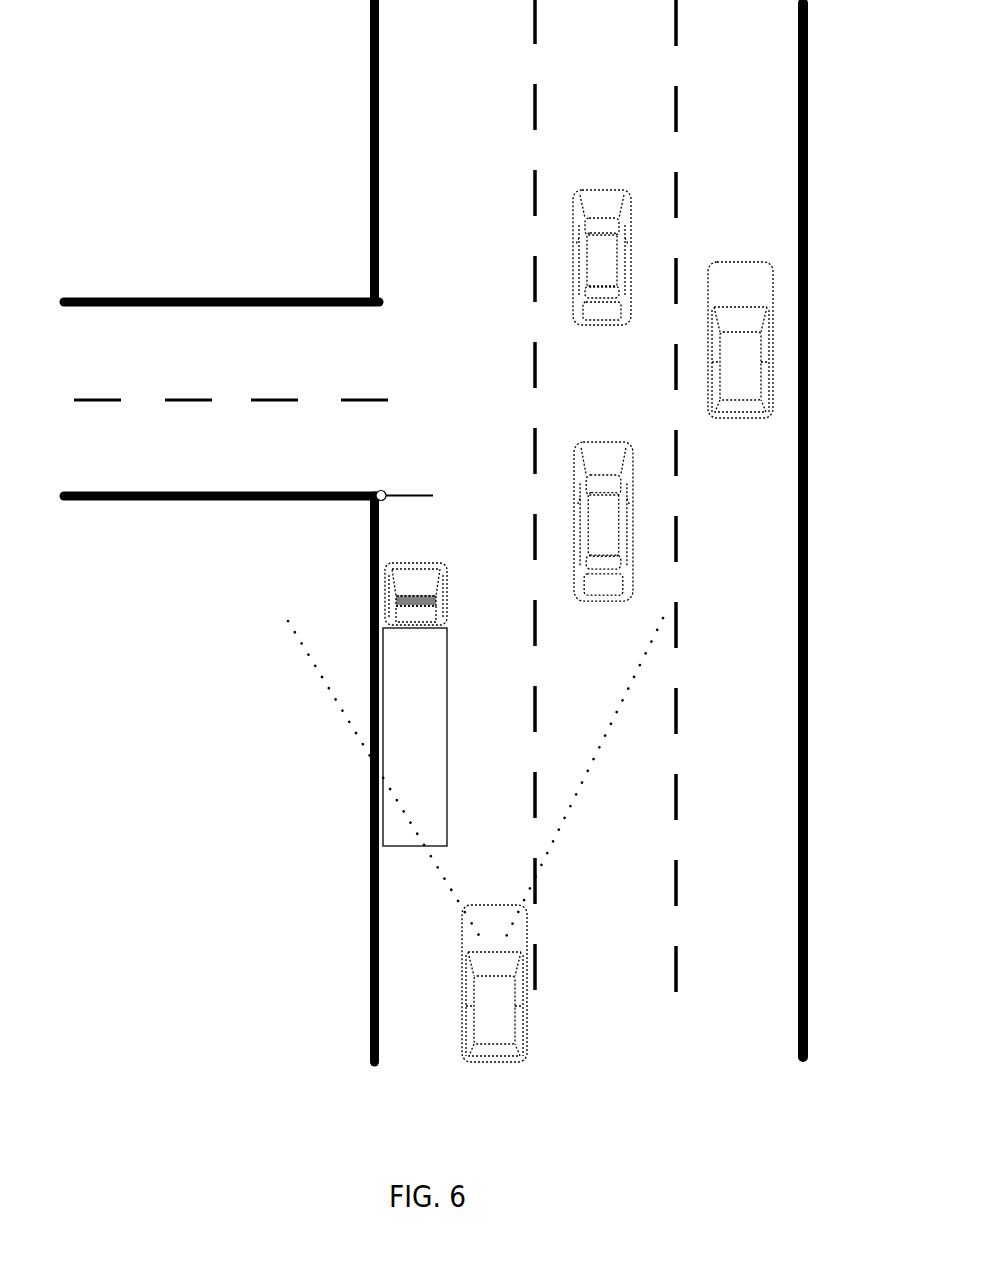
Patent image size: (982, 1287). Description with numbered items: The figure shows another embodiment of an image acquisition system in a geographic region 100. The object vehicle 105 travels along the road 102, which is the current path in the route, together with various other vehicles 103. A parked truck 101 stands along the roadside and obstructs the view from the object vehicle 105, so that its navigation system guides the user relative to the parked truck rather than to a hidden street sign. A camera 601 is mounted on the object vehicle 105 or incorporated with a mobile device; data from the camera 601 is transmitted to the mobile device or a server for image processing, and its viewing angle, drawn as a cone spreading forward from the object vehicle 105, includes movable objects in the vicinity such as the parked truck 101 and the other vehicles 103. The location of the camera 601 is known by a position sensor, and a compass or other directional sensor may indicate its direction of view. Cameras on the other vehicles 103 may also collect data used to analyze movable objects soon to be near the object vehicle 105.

The roadside sensor unit 100 is at (422, 495).
The parked truck 101 is at (446, 762).
The road 102 is at (345, 97).
The vehicles 103 is at (604, 190).
The object vehicle 105 is at (511, 1062).
The camera 601 is at (491, 954).